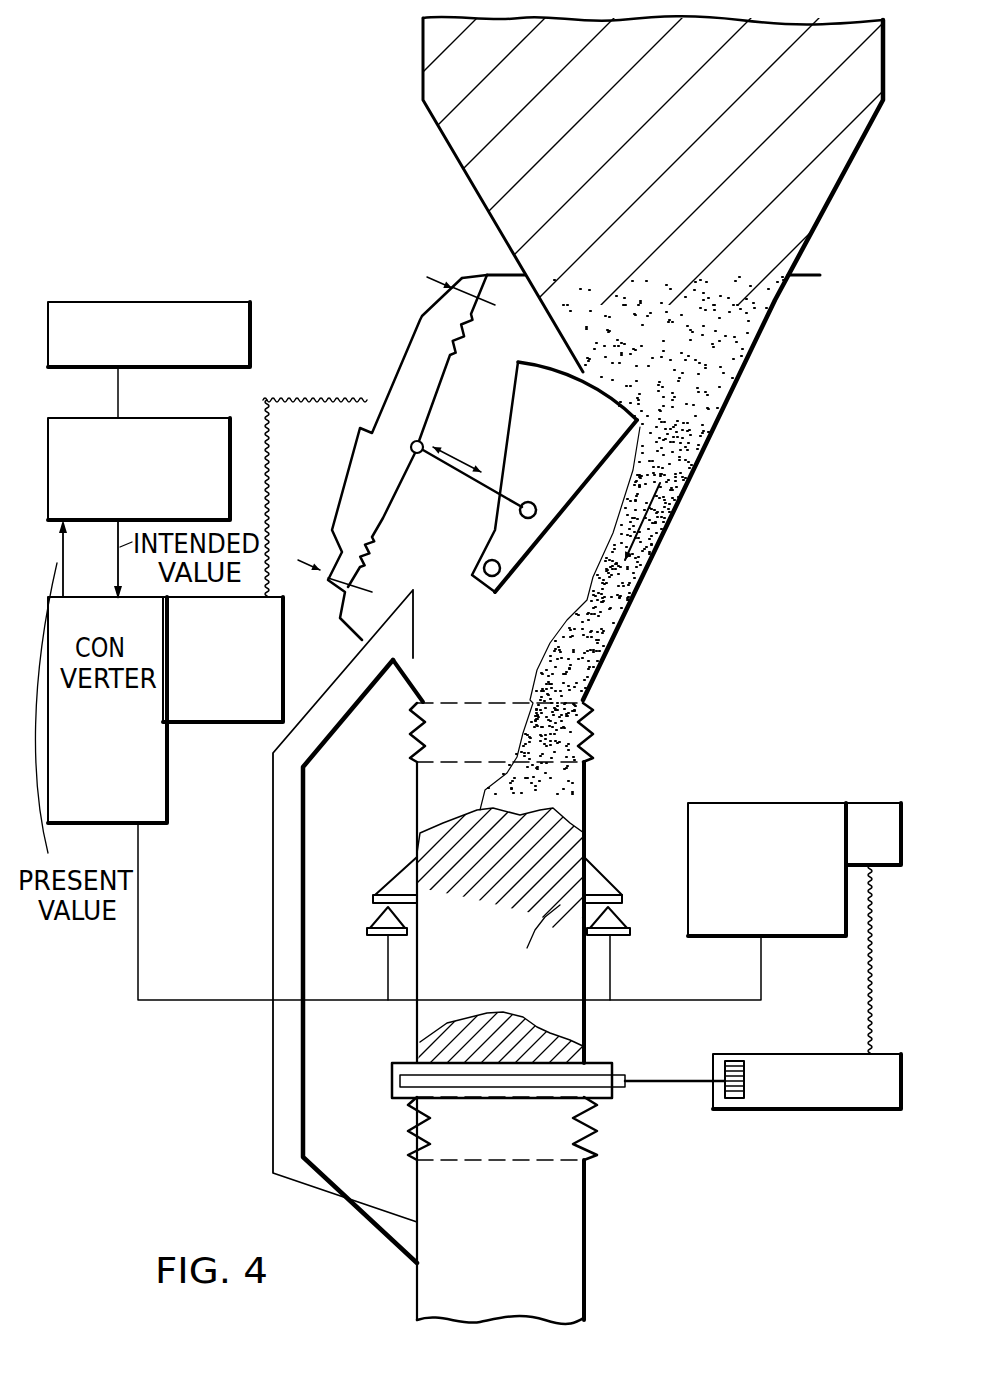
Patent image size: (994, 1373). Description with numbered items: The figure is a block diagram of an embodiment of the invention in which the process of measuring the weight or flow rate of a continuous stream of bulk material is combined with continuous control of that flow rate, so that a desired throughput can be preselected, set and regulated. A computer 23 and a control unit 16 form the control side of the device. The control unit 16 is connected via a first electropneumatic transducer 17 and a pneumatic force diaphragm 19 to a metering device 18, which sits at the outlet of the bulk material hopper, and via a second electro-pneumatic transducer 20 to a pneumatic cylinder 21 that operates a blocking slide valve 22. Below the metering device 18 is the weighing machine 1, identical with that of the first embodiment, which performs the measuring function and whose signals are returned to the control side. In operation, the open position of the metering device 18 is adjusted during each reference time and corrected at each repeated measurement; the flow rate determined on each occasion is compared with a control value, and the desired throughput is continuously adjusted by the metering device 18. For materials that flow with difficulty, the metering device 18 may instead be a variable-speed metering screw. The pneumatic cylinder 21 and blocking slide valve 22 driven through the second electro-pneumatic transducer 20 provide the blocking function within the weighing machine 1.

The weighing machine 1 is at (590, 868).
The control unit 16 is at (177, 428).
The first electropneumatic transducer 17 is at (210, 700).
The metering device 18 is at (590, 433).
The pneumatic force diaphragm 19 is at (443, 370).
The second electro-pneumatic transducer 20 is at (780, 803).
The pneumatic cylinder 21 is at (805, 1109).
The blocking slide valve 22 is at (669, 1083).
The computer 23 is at (233, 348).